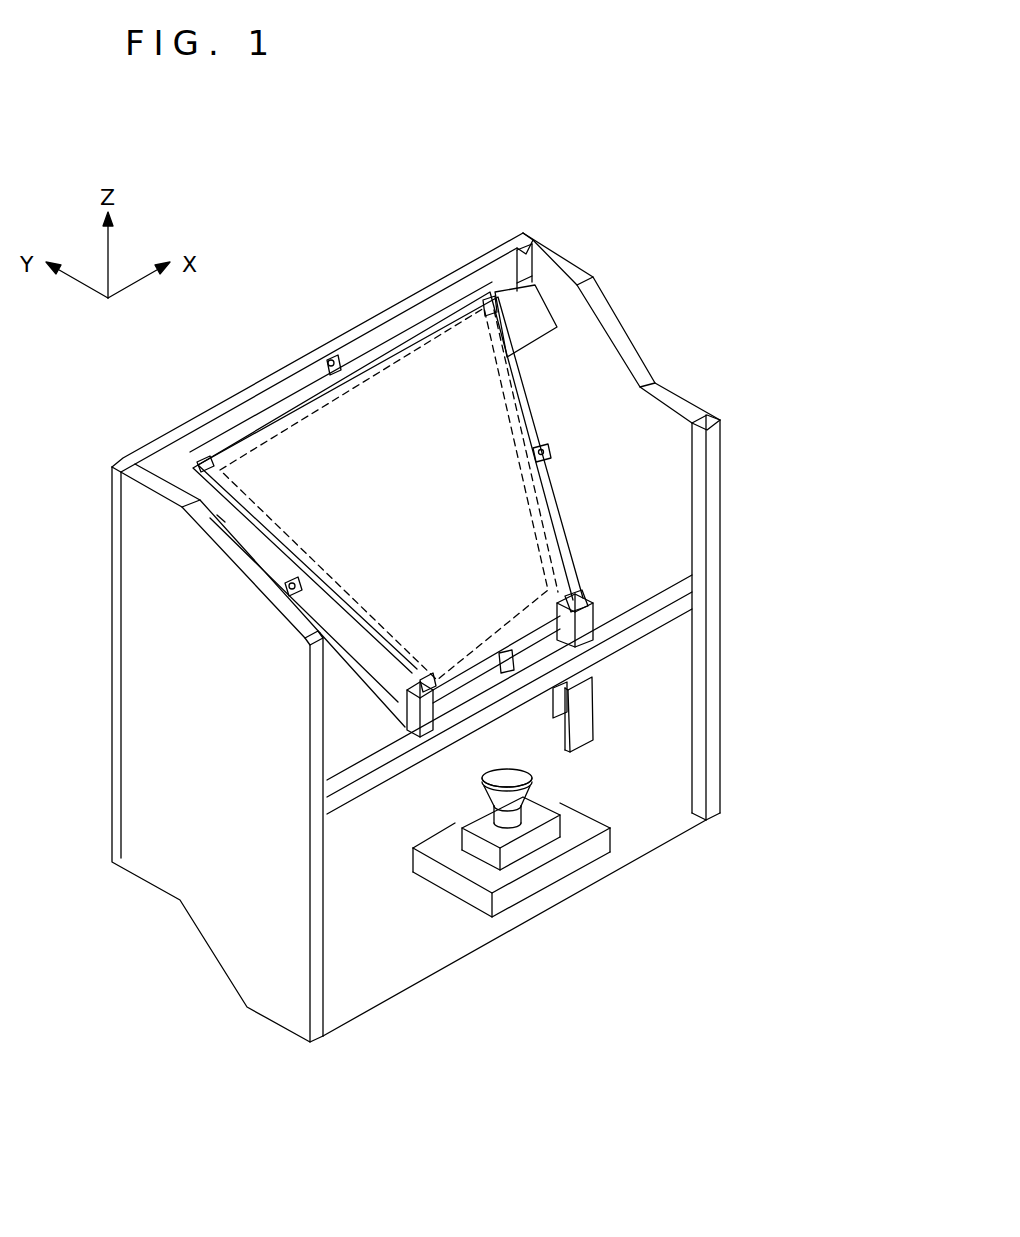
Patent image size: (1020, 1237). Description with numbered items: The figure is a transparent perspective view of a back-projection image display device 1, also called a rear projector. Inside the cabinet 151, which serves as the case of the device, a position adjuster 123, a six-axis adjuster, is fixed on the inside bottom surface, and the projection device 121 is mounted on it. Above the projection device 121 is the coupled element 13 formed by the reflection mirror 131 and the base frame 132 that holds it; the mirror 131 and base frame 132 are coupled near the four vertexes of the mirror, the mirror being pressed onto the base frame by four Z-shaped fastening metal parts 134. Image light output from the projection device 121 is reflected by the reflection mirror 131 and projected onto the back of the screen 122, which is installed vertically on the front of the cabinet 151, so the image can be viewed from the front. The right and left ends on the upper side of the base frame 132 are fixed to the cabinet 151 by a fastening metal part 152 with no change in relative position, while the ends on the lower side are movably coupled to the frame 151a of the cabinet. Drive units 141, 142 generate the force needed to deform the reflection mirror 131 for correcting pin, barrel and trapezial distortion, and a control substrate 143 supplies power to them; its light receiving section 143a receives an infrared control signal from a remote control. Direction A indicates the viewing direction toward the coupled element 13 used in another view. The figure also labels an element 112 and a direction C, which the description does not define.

The back-projection image display device 1 is at (664, 222).
The coupled element 13 is at (519, 486).
The reflection mirror 131 is at (505, 532).
The base frame 132 is at (547, 470).
The frame bar 112 is at (600, 603).
The projection device 121 is at (545, 835).
The screen 122 is at (482, 264).
The position adjuster 123 is at (555, 878).
The fastening metal part 134 is at (497, 302).
The drive unit 141 is at (331, 360).
The drive unit 142 is at (395, 706).
The control substrate 143 is at (588, 707).
The light receiving section 143a is at (572, 680).
The cabinet 151 is at (682, 395).
The frame 151a is at (350, 795).
The fastening metal part 152 is at (540, 319).
The direction A is at (412, 522).
The direction C is at (360, 720).